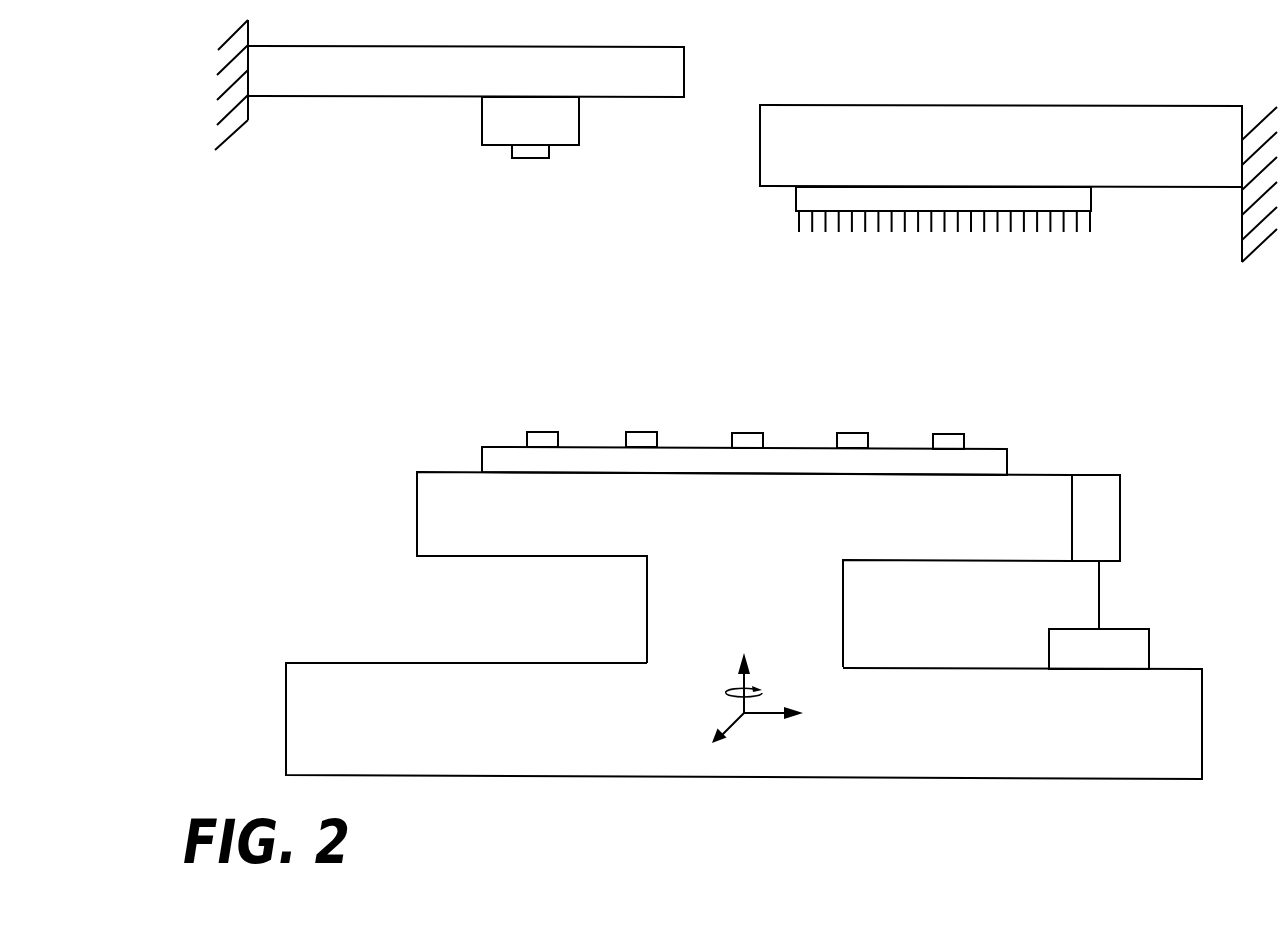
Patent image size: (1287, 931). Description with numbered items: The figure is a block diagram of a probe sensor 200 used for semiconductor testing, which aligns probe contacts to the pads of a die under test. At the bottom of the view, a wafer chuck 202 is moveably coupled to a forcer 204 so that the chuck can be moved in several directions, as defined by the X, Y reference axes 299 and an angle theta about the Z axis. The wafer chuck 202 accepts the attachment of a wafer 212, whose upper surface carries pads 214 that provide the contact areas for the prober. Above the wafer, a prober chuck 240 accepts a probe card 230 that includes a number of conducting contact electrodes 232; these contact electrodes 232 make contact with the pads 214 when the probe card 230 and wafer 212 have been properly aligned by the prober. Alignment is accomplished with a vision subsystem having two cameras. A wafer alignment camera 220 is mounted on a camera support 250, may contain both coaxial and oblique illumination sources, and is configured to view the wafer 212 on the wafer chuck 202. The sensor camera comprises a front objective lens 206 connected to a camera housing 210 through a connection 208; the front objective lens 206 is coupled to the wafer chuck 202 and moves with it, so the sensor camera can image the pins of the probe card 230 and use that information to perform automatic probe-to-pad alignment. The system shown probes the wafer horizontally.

The probe sensor 200 is at (285, 298).
The wafer chuck 202 is at (422, 509).
The forcer 204 is at (416, 766).
The front objective lens 206 is at (1123, 520).
The connection 208 is at (1099, 593).
The camera housing 210 is at (1086, 665).
The wafer 212 is at (518, 467).
The pads 214 is at (540, 438).
The wafer alignment camera 220 is at (568, 123).
The probe card 230 is at (1090, 198).
The contact electrodes 232 is at (1010, 230).
The prober chuck 240 is at (1233, 181).
The camera support 250 is at (669, 93).
The reference axes 299 is at (807, 689).